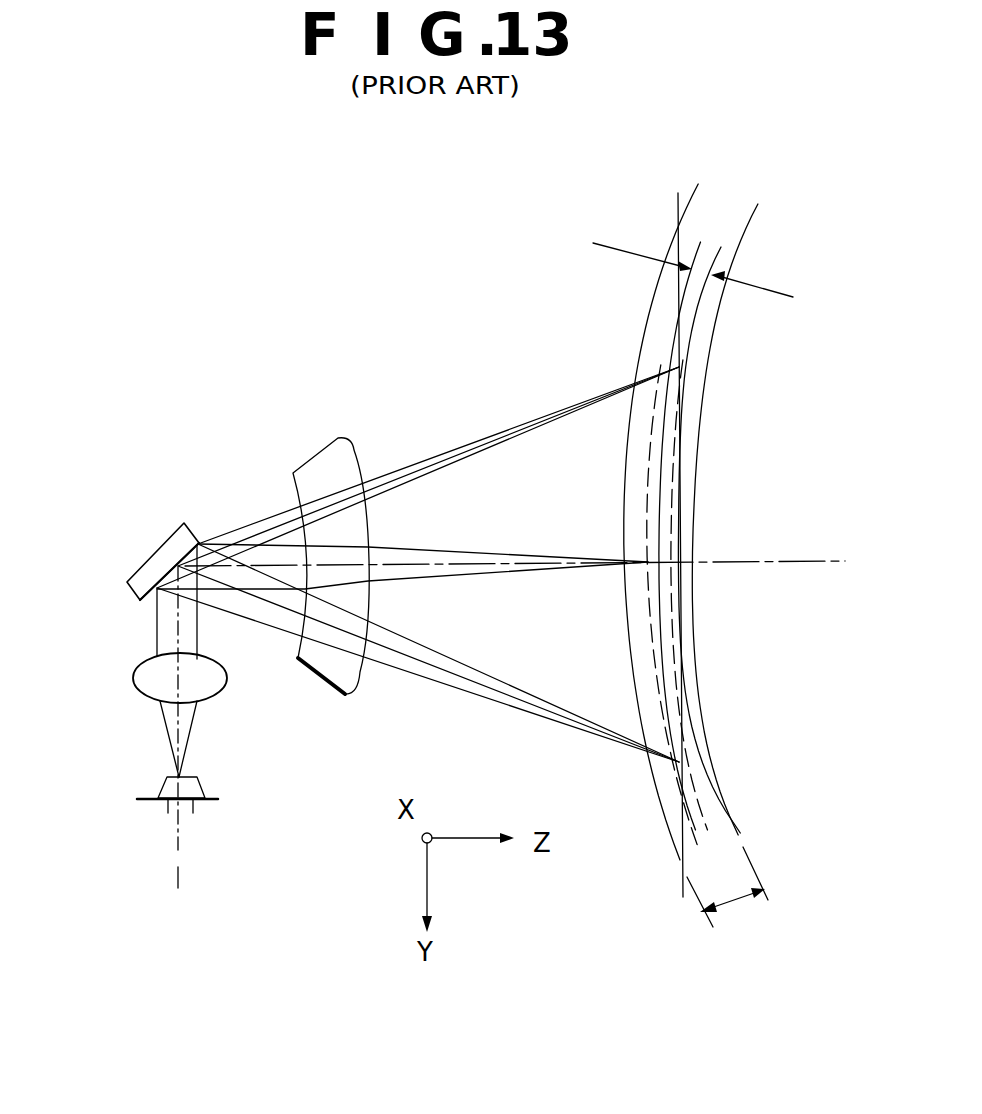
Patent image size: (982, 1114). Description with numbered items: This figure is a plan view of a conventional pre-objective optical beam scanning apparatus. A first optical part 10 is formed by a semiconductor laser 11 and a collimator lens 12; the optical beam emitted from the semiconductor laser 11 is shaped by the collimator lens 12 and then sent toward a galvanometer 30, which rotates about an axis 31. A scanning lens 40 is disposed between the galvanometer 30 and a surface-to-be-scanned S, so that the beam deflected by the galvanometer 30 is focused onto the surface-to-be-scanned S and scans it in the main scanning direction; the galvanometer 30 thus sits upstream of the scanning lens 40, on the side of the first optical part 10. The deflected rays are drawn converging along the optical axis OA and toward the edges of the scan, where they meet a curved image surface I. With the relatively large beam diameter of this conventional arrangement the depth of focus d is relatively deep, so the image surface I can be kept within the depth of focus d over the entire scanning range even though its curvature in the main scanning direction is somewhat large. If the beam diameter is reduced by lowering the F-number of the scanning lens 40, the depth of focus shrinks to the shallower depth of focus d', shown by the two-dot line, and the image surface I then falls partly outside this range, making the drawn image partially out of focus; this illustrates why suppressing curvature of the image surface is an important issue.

The first optical part 10 is at (269, 716).
The semiconductor laser 11 is at (220, 789).
The collimator lens 12 is at (205, 680).
The galvanometer 30 is at (140, 599).
The axis 31 is at (165, 557).
The scanning lens 40 is at (329, 476).
The surface-to-be-scanned S is at (682, 832).
The image surface I is at (660, 690).
The optical axis OA is at (515, 546).
The depth of focus d is at (729, 918).
The depth of focus d' is at (700, 267).